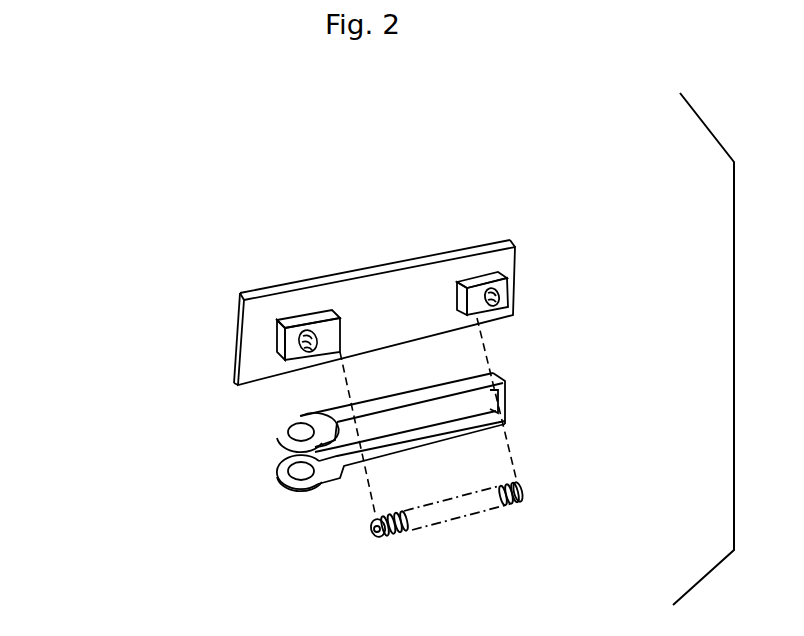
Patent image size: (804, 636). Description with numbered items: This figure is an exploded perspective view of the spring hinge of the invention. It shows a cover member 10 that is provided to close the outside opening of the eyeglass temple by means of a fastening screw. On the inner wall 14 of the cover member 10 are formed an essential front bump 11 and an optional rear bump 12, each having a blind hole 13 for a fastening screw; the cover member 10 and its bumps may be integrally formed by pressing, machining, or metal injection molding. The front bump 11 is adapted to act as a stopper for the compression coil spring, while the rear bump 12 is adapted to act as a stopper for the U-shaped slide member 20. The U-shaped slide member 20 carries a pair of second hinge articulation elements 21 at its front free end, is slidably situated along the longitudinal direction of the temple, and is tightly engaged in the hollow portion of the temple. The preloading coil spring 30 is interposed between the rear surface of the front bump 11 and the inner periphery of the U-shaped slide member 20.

The cover member 10 is at (446, 252).
The front bump 11 is at (310, 331).
The rear bump 12 is at (507, 271).
The blind hole 13 is at (296, 339).
The inner wall 14 is at (372, 293).
The U-shaped slide member 20 is at (497, 379).
The second hinge articulation element 21 is at (277, 435).
The preloading coil spring 30 is at (437, 512).